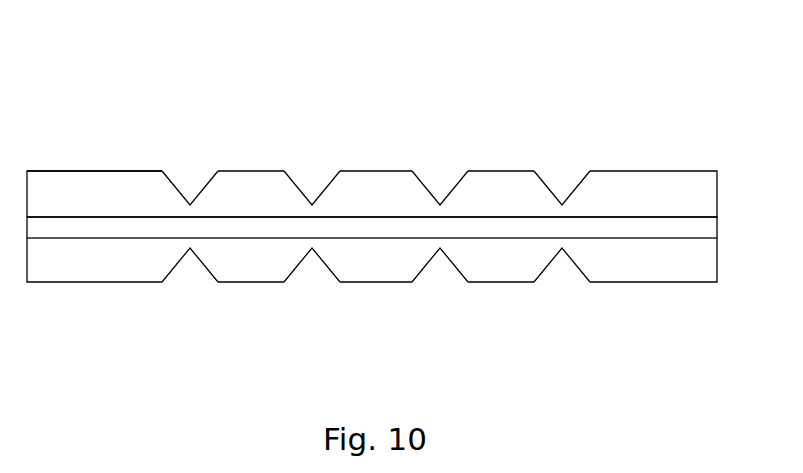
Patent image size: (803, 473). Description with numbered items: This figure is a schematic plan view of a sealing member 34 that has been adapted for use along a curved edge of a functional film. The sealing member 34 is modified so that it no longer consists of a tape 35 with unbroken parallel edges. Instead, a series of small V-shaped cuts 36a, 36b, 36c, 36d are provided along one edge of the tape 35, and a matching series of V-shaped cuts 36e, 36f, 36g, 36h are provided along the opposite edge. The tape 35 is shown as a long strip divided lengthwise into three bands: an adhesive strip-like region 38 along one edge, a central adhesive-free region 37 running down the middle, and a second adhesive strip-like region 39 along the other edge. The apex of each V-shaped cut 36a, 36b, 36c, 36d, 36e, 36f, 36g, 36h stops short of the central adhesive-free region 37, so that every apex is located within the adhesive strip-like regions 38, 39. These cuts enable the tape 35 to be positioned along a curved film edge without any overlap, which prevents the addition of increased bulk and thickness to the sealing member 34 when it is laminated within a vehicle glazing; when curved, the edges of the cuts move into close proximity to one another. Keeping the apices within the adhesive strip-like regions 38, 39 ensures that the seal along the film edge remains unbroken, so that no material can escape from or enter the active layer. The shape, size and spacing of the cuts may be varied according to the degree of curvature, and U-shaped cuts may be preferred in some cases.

The sealing member 34 is at (400, 197).
The tape 35 is at (62, 160).
The V-shaped cut 36a is at (190, 185).
The V-shaped cut 36b is at (310, 188).
The V-shaped cut 36c is at (440, 188).
The V-shaped cut 36d is at (565, 187).
The V-shaped cut 36e is at (192, 280).
The V-shaped cut 36f is at (312, 280).
The V-shaped cut 36g is at (435, 278).
The V-shaped cut 36h is at (565, 273).
The central adhesive-free region 37 is at (707, 225).
The adhesive strip-like region 38 is at (372, 162).
The adhesive strip-like region 39 is at (372, 304).